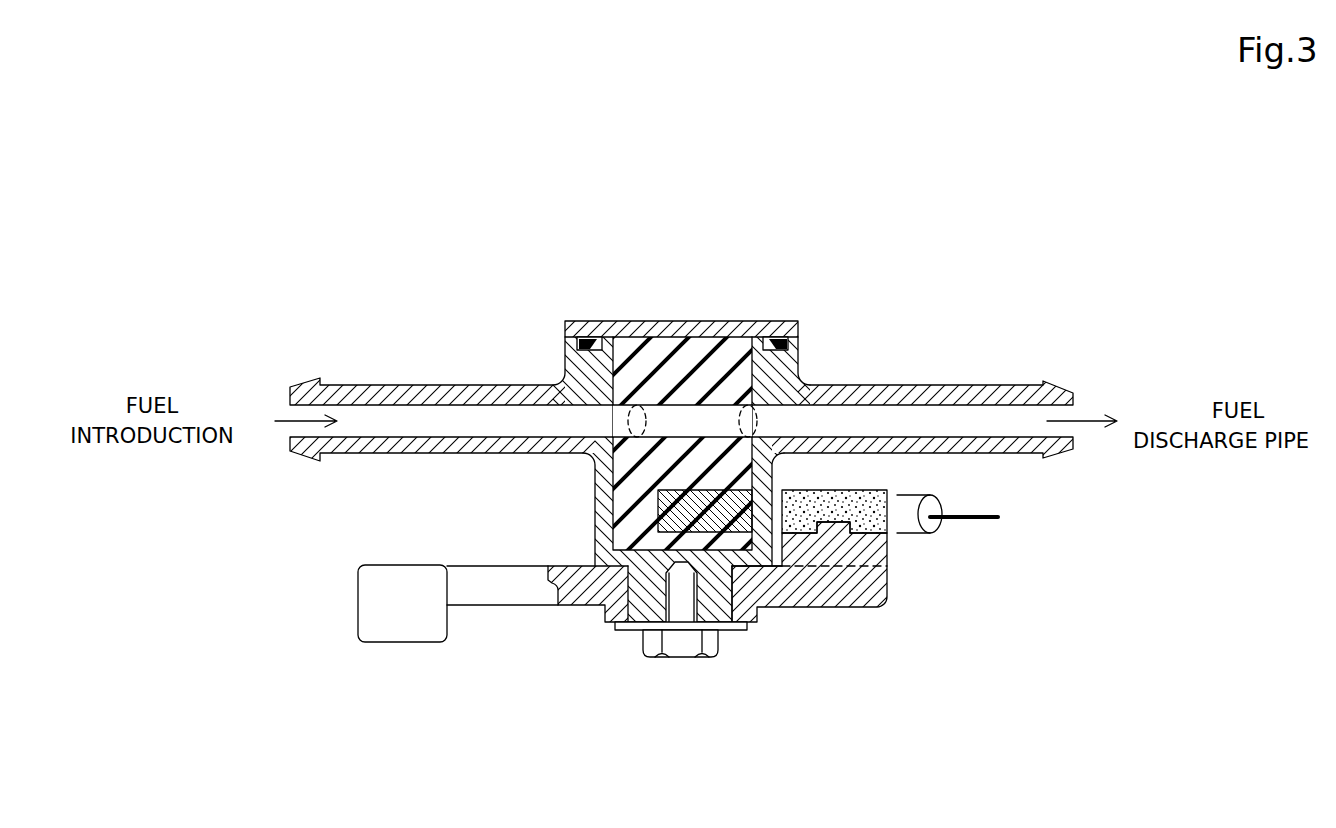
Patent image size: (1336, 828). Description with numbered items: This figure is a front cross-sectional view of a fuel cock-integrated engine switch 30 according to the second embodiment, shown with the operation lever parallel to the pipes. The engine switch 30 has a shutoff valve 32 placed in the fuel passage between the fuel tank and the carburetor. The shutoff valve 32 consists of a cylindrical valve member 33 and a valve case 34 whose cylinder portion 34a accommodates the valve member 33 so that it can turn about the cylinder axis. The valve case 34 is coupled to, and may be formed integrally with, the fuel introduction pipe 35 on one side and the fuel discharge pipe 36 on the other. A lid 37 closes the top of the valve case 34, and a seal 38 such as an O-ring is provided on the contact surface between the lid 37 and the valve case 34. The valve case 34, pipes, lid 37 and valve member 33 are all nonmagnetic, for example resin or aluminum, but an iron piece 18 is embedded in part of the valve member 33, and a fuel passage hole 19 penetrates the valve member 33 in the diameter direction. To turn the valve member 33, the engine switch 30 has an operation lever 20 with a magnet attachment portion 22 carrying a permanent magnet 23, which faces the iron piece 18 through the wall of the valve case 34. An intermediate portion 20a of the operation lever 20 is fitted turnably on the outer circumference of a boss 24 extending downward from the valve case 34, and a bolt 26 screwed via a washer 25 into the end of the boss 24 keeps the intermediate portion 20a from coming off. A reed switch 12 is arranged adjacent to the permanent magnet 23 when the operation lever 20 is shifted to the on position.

The engine switch 30 is at (948, 290).
The shutoff valve 32 is at (557, 478).
The fuel introduction pipe 35 is at (382, 392).
The fuel discharge pipe 36 is at (988, 388).
The lid 37 is at (749, 324).
The seal 38 is at (591, 345).
The valve member 33 is at (795, 352).
The fuel passage hole 19 is at (676, 420).
The valve case 34 is at (594, 545).
The cylinder portion 34a is at (614, 492).
The iron piece 18 is at (740, 503).
The permanent magnet 23 is at (840, 500).
The magnet attachment portion 22 is at (883, 553).
The reed switch 12 is at (935, 530).
The operation lever 20 is at (401, 622).
The intermediate portion 20a is at (750, 612).
The boss 24 is at (638, 588).
The washer 25 is at (733, 632).
The bolt 26 is at (678, 652).